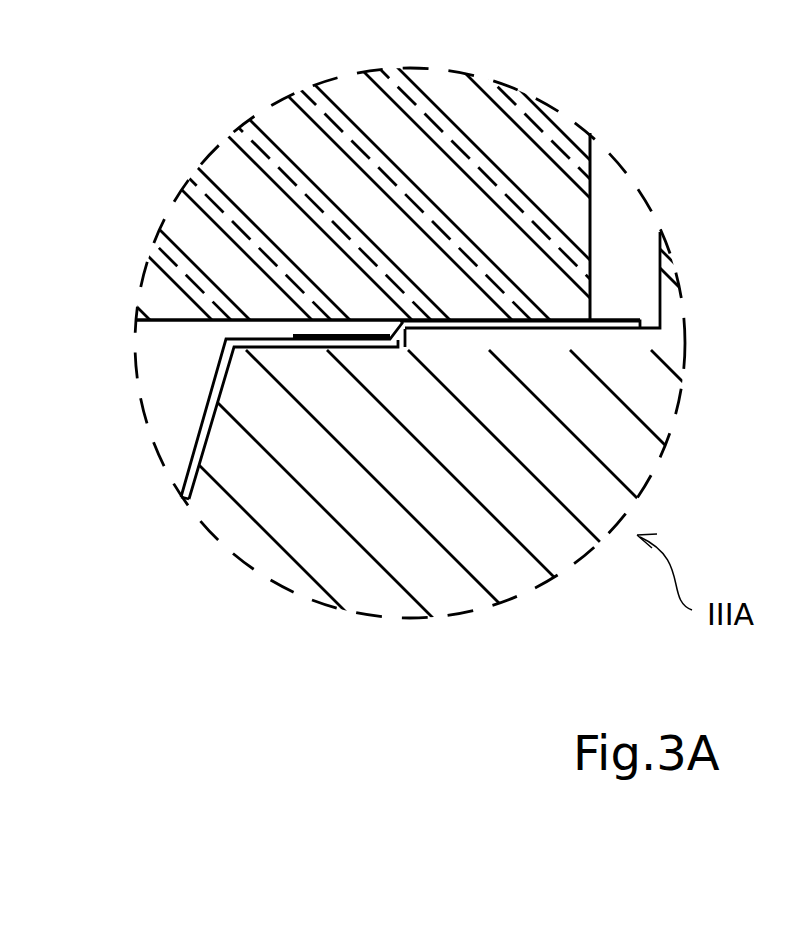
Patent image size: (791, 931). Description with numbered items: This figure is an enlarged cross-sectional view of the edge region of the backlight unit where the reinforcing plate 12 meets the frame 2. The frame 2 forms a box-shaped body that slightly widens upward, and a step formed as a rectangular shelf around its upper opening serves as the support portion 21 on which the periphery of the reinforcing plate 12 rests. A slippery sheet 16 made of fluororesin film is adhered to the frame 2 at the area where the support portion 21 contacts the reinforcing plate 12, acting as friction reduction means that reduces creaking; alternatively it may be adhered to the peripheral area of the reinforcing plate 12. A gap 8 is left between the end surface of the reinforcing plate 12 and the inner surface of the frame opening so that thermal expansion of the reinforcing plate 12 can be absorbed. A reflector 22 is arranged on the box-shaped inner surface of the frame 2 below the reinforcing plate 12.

The frame 2 is at (445, 585).
The gap 8 is at (612, 197).
The reinforcing plate 12 is at (517, 132).
The slippery sheet 16 is at (628, 318).
The support portion 21 is at (527, 330).
The reflector 22 is at (192, 456).